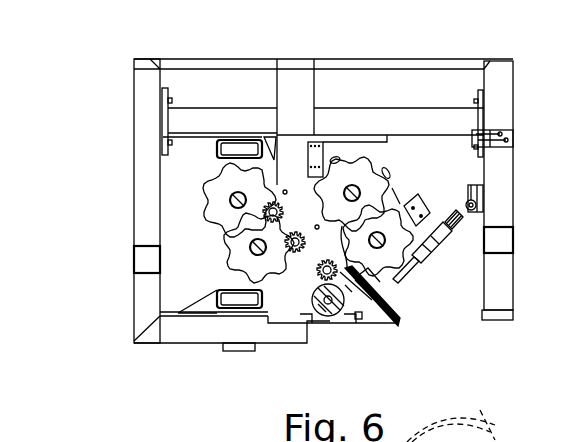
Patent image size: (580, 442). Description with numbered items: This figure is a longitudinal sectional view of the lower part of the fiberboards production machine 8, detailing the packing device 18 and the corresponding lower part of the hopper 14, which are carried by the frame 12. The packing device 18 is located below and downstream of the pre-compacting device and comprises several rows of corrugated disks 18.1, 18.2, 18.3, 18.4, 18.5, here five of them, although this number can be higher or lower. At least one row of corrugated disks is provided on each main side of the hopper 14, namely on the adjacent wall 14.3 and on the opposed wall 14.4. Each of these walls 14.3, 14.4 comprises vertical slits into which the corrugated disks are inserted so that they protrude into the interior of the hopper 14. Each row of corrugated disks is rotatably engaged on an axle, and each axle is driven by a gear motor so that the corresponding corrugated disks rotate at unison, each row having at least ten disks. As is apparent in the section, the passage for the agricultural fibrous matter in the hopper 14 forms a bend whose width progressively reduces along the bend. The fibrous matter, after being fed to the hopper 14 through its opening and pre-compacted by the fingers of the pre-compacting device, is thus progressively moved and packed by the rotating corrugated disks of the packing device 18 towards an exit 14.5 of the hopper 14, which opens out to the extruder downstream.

The fiberboards production machine 8 is at (118, 50).
The frame 12 is at (147, 117).
The hopper 14 is at (291, 68).
The adjacent wall 14.3 is at (276, 116).
The opposed wall 14.4 is at (318, 74).
The exit 14.5 is at (397, 321).
The packing device 18 is at (108, 283).
The row of corrugated disks 18.1 is at (388, 161).
The row of corrugated disks 18.2 is at (442, 283).
The row of corrugated disks 18.3 is at (281, 327).
The row of corrugated disks 18.4 is at (216, 274).
The row of corrugated disks 18.5 is at (188, 206).